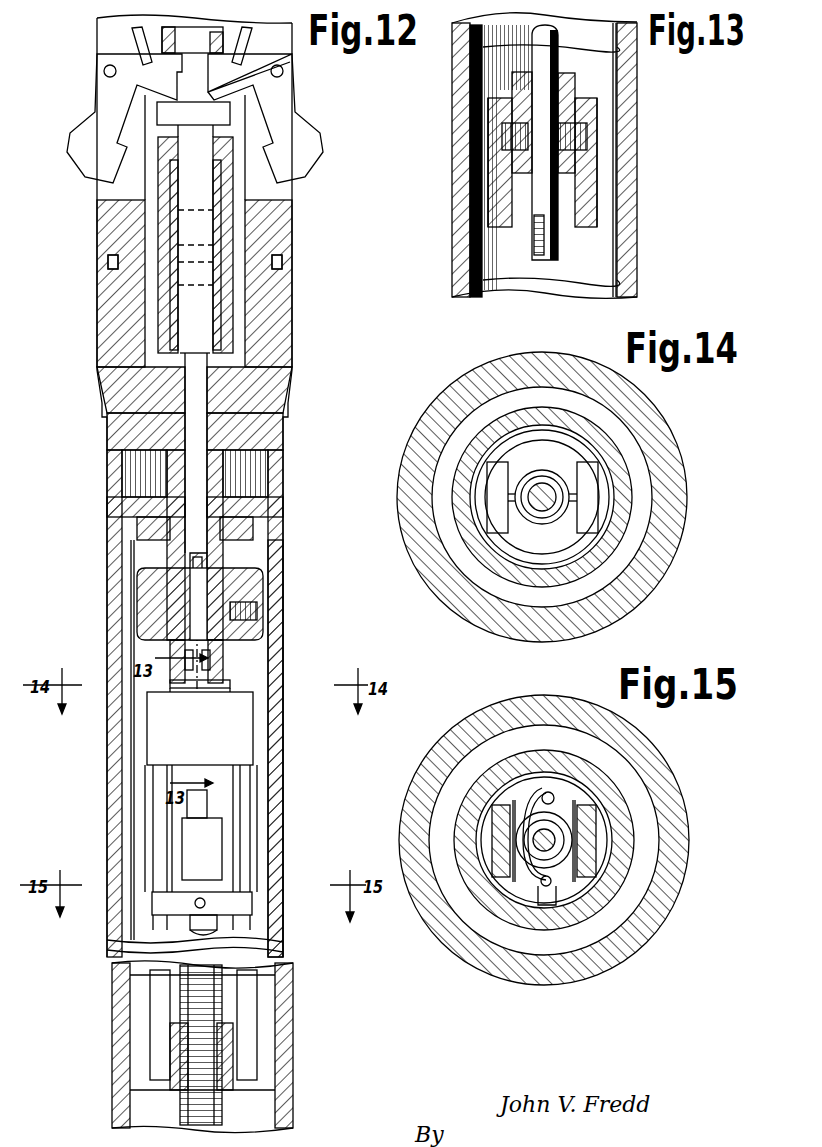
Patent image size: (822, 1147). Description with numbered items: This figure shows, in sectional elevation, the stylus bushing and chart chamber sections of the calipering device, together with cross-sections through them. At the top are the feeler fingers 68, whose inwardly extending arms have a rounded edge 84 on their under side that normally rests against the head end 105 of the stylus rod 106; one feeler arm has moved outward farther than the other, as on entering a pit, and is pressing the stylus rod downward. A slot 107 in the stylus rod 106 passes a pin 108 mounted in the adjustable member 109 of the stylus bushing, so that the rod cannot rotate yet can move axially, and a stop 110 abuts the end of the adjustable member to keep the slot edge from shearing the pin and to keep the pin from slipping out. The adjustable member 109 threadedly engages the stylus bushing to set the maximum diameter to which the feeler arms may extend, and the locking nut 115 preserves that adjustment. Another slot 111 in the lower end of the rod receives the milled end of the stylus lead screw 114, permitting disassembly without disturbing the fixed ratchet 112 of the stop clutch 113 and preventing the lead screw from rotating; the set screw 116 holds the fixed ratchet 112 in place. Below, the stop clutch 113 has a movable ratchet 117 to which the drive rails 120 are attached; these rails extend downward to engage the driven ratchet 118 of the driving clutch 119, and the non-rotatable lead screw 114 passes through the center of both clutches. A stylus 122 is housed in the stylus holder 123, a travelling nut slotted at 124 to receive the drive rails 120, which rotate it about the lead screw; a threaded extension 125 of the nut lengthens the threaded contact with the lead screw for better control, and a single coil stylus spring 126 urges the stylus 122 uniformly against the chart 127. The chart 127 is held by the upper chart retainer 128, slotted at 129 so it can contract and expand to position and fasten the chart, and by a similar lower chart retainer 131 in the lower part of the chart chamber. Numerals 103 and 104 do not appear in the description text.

In FIG. 12, the feeler fingers 68 is at (100, 110).
In FIG. 12, the rounded edge 84 is at (284, 69).
In FIG. 12, the housing 103 is at (105, 532).
In FIG. 12, the collar 104 is at (285, 505).
In FIG. 12, the head end 105 is at (225, 113).
In FIG. 12, the stylus rod 106 is at (213, 197).
In FIG. 12, the slot 107 is at (205, 230).
In FIG. 12, the pin 108 is at (207, 255).
In FIG. 12, the adjustable member 109 is at (220, 318).
In FIG. 12, the stop 110 is at (222, 285).
In FIG. 12, the slot 111 is at (200, 576).
In FIG. 12, the fixed ratchet 112 is at (212, 658).
In FIG. 12, the stop clutch 113 is at (230, 668).
In FIG. 12, the stylus lead screw 114 is at (203, 648).
In FIG. 13, the stylus lead screw 114 is at (540, 53).
In FIG. 14, the stylus lead screw 114 is at (560, 497).
In FIG. 15, the stylus lead screw 114 is at (560, 830).
In FIG. 12, the locking nut 115 is at (258, 536).
In FIG. 12, the set screw 116 is at (258, 612).
In FIG. 12, the movable ratchet 117 is at (232, 675).
In FIG. 13, the movable ratchet 117 is at (577, 88).
In FIG. 14, the movable ratchet 117 is at (540, 478).
In FIG. 12, the driven ratchet 118 is at (210, 1112).
In FIG. 12, the driving clutch 119 is at (190, 1092).
In FIG. 12, the drive rails 120 is at (160, 815).
In FIG. 13, the drive rails 120 is at (590, 222).
In FIG. 14, the drive rails 120 is at (590, 517).
In FIG. 15, the drive rails 120 is at (470, 810).
In FIG. 12, the stylus 122 is at (207, 907).
In FIG. 15, the stylus 122 is at (562, 907).
In FIG. 12, the stylus holder 123 is at (240, 900).
In FIG. 15, the stylus holder 123 is at (535, 905).
In FIG. 15, the slots 124 is at (552, 762).
In FIG. 12, the threaded extension 125 is at (208, 833).
In FIG. 15, the threaded extension 125 is at (572, 856).
In FIG. 15, the stylus spring 126 is at (510, 762).
In FIG. 12, the chart 127 is at (290, 947).
In FIG. 15, the chart 127 is at (590, 872).
In FIG. 12, the upper chart retainer 128 is at (283, 750).
In FIG. 13, the upper chart retainer 128 is at (614, 122).
In FIG. 14, the upper chart retainer 128 is at (477, 440).
In FIG. 13, the slot 129 is at (477, 118).
In FIG. 14, the slot 129 is at (455, 478).
In FIG. 12, the lower chart retainer 131 is at (282, 1040).